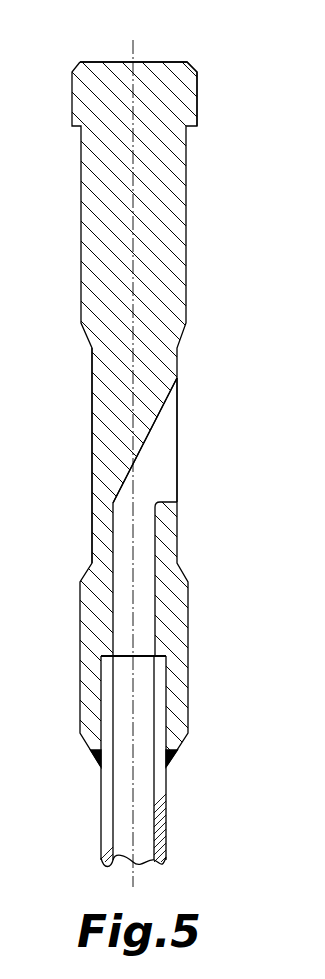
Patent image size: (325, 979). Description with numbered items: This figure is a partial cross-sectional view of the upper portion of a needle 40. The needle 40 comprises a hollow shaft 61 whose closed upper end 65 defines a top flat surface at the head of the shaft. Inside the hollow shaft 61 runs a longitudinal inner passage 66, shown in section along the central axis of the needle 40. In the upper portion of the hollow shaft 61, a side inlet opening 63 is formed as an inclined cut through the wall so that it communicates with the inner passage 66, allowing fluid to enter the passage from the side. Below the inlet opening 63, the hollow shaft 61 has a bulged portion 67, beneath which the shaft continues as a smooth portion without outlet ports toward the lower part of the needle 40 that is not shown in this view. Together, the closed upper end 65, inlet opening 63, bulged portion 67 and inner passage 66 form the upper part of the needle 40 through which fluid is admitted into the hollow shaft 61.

The needle 40 is at (232, 238).
The closed upper end 65 is at (155, 72).
The hollow shaft 61 is at (97, 530).
The side inlet opening 63 is at (167, 467).
The bulged portion 67 is at (178, 627).
The longitudinal inner passage 66 is at (143, 808).